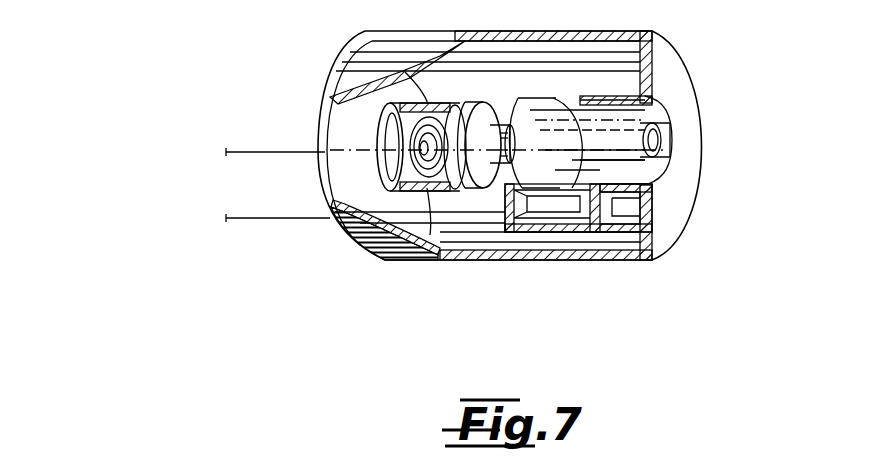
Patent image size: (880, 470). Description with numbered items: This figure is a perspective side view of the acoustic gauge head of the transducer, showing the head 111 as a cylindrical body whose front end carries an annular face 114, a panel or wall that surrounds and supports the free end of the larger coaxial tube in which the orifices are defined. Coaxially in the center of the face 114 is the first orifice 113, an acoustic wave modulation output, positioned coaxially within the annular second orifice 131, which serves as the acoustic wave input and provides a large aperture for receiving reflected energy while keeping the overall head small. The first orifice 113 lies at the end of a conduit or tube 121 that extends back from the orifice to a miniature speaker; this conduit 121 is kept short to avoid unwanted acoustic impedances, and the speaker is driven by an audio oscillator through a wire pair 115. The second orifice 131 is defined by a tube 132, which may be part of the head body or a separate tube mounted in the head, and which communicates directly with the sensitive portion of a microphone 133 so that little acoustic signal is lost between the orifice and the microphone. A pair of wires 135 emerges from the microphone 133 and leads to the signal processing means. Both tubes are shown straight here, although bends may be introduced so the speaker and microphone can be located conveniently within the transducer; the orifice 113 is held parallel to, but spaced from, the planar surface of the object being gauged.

The head 111 is at (557, 277).
The first orifice 113 is at (655, 137).
The face 114 is at (670, 68).
The wire pair 115 is at (282, 155).
The conduit or tube 121 is at (511, 118).
The second orifice 131 is at (655, 118).
The conduit or tube 132 is at (668, 183).
The microphone 133 is at (572, 207).
The pair of wires 135 is at (282, 219).